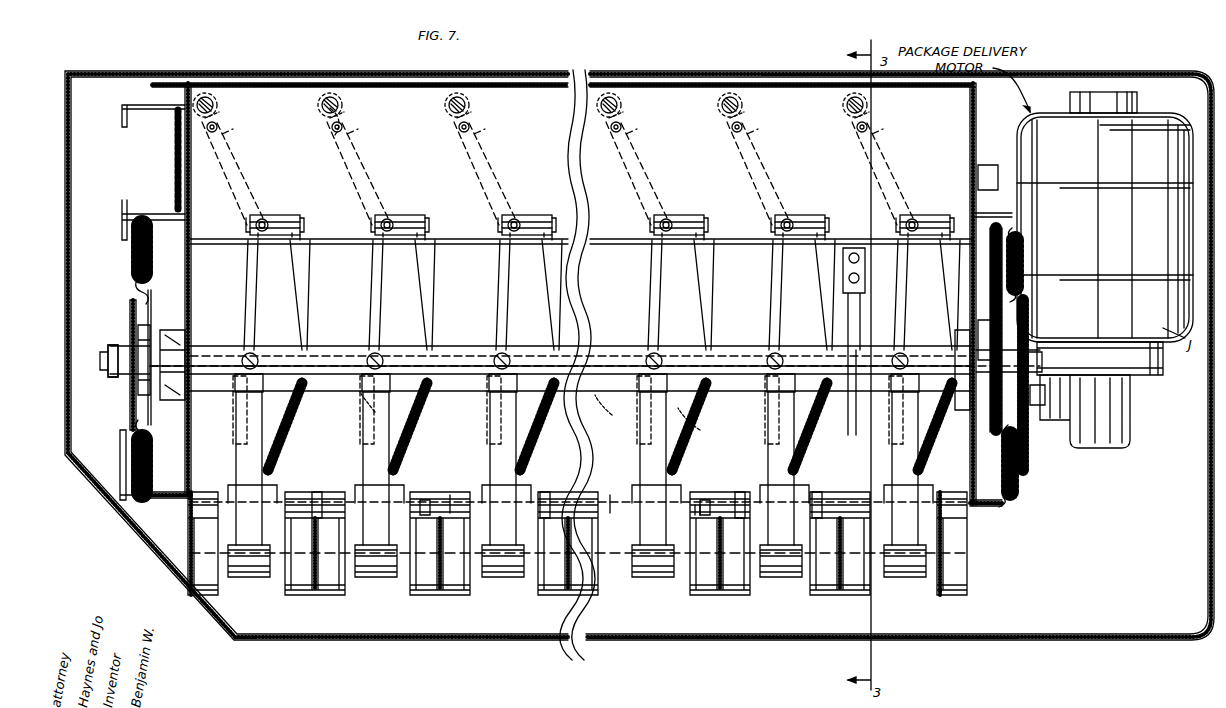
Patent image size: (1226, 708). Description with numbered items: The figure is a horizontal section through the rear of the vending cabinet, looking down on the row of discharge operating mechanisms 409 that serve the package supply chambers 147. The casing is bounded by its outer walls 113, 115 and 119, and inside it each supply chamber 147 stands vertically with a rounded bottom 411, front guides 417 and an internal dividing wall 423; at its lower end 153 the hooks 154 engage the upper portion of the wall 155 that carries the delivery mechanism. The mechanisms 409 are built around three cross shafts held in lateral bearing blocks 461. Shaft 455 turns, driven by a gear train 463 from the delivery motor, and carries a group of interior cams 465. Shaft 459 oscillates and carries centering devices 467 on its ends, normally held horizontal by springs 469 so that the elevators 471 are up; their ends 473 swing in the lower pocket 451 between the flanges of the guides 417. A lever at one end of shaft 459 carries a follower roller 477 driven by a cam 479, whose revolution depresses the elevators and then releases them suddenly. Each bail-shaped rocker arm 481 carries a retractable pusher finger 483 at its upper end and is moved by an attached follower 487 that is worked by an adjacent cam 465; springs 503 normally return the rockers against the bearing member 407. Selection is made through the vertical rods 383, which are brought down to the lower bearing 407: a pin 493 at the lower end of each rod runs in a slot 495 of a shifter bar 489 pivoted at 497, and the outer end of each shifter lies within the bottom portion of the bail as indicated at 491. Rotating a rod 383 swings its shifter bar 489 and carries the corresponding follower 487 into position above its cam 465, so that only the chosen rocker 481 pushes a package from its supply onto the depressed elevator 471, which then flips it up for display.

The casing 113 is at (1212, 466).
The casing top wall 115 is at (762, 72).
The casing bottom wall 119 is at (468, 640).
The lower bearing 407 is at (675, 105).
The discharge operating mechanism 409 is at (238, 300).
The rod 383 is at (216, 104).
The slot 495 is at (228, 130).
The pin 493 is at (355, 110).
The shifter bar 489 is at (340, 168).
The pivot 497 is at (266, 218).
The pusher finger 483 is at (360, 222).
The rocker arm 481 is at (246, 270).
The bottom portion of bail 491 is at (262, 340).
The cross shaft 459 is at (128, 338).
The spring 503 is at (282, 435).
The elevator 471 is at (236, 446).
The interior cam 465 is at (232, 424).
The follower 487 is at (350, 408).
The cross shaft 455 is at (448, 392).
The bearing block 461 is at (152, 292).
The spring 469 is at (130, 258).
The follower roller 477 is at (108, 360).
The cam 479 is at (136, 383).
The centering device 467 is at (140, 400).
The pocket 451 is at (200, 540).
The gear train 463 is at (1005, 418).
The front guide 417 is at (218, 594).
The supply chamber 147 is at (325, 595).
The elevator end 473 is at (252, 570).
The lower end 153 is at (322, 492).
The hook 154 is at (552, 492).
The wall 155 is at (700, 495).
The vertical wall 423 is at (422, 500).
The rounded bottom 411 is at (452, 495).